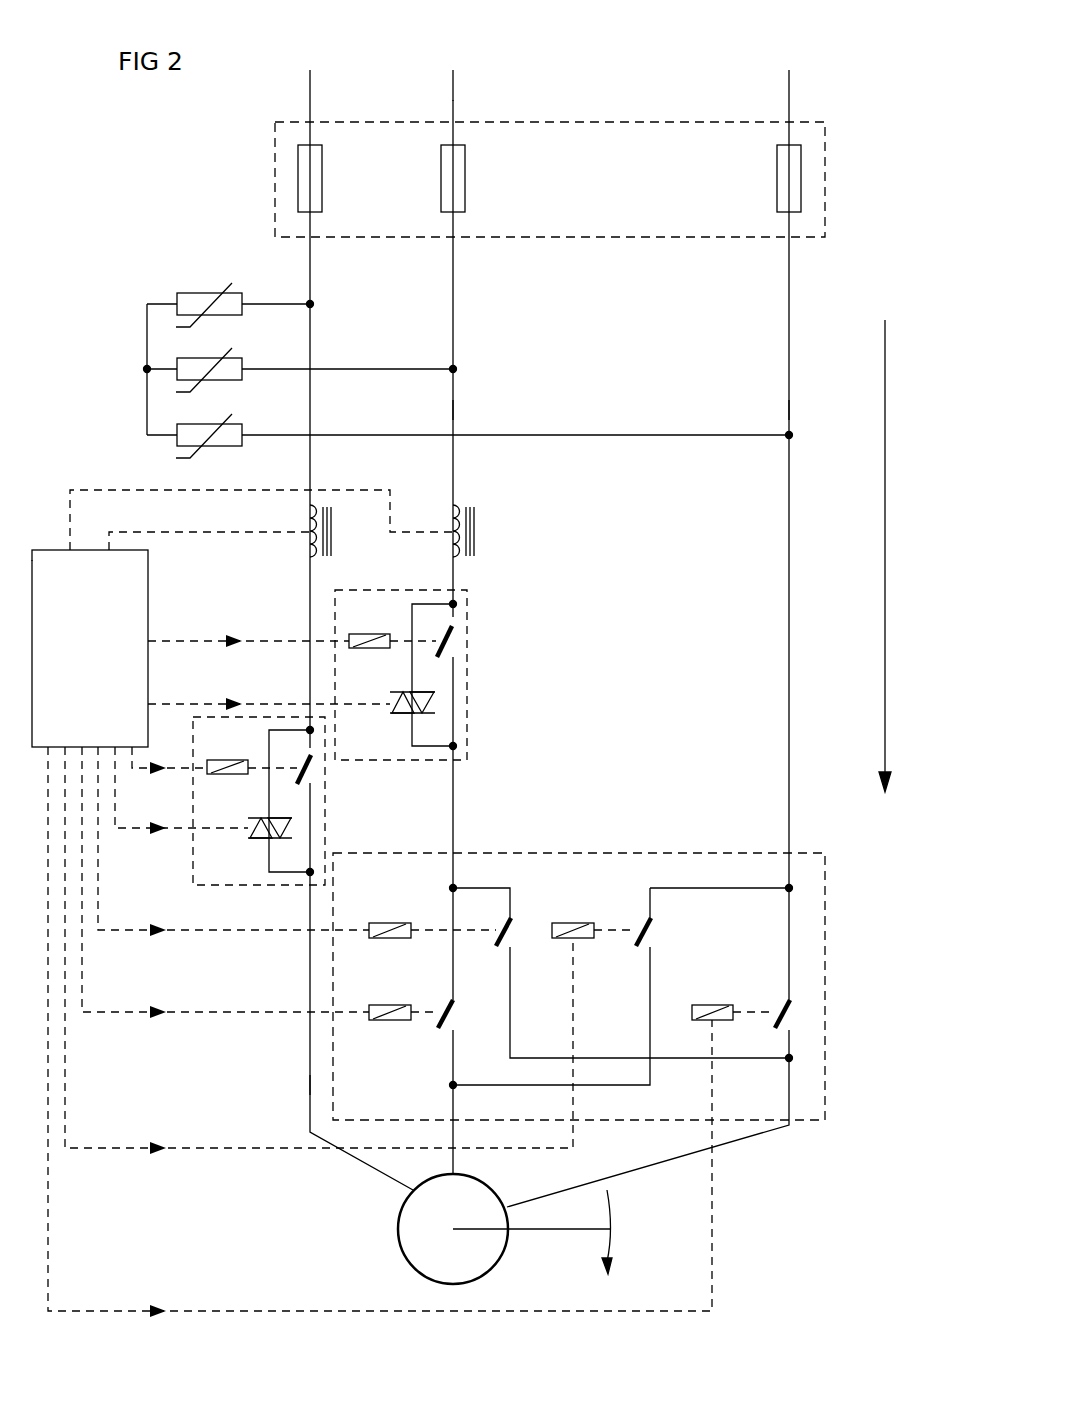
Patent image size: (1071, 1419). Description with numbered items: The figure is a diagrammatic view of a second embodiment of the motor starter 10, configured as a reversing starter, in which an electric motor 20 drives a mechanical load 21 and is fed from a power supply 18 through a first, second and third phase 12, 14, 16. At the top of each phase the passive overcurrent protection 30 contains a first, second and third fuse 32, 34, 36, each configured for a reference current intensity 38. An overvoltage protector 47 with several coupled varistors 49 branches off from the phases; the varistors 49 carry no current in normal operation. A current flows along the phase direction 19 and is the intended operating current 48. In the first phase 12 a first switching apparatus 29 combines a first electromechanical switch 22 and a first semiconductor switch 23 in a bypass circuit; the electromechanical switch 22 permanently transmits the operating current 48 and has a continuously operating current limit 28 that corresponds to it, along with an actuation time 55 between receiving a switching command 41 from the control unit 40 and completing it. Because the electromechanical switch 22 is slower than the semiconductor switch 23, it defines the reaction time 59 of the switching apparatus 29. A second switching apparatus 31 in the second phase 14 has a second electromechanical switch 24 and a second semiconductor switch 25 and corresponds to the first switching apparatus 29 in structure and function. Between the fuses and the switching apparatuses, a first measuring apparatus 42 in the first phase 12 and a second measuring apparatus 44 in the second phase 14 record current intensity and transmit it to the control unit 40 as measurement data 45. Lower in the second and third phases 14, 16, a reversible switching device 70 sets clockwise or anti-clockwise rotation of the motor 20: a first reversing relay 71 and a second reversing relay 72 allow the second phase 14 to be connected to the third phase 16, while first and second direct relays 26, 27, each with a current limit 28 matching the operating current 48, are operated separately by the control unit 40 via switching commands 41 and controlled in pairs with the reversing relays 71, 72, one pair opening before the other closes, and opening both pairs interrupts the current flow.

The motor starter 10 is at (122, 195).
The first phase 12 is at (310, 97).
The second phase 14 is at (453, 97).
The third phase 16 is at (789, 97).
The power supply 18 is at (619, 71).
The phase direction 19 is at (888, 548).
The electric motor 20 is at (398, 1229).
The mechanical load 21 is at (612, 1224).
The first electromechanical switch 22 is at (232, 776).
The first semiconductor switch 23 is at (287, 826).
The second electromechanical switch 24 is at (368, 634).
The second semiconductor switch 25 is at (435, 700).
The first direct relay 26 is at (710, 1004).
The second direct relay 27 is at (390, 1021).
The continuously operating current limit 28 is at (411, 854).
The first switching apparatus 29 is at (411, 854).
The passive overcurrent protection 30 is at (825, 185).
The second switching apparatus 31 is at (467, 677).
The first fuse 32 is at (322, 186).
The second fuse 34 is at (465, 186).
The third fuse 36 is at (777, 186).
The reference current intensity 38 is at (549, 177).
The control unit 40 is at (104, 665).
The switching command 41 is at (232, 643).
The first measuring apparatus 42 is at (333, 535).
The second measuring apparatus 44 is at (476, 535).
The measurement data 45 is at (160, 486).
The overvoltage protector 47 is at (300, 276).
The operating current 48 is at (455, 411).
The varistor 49 is at (242, 311).
The actuation time 55 is at (407, 773).
The reaction time 59 is at (200, 885).
The reversible switching device 70 is at (825, 985).
The first reversing relay 71 is at (572, 922).
The second reversing relay 72 is at (388, 922).